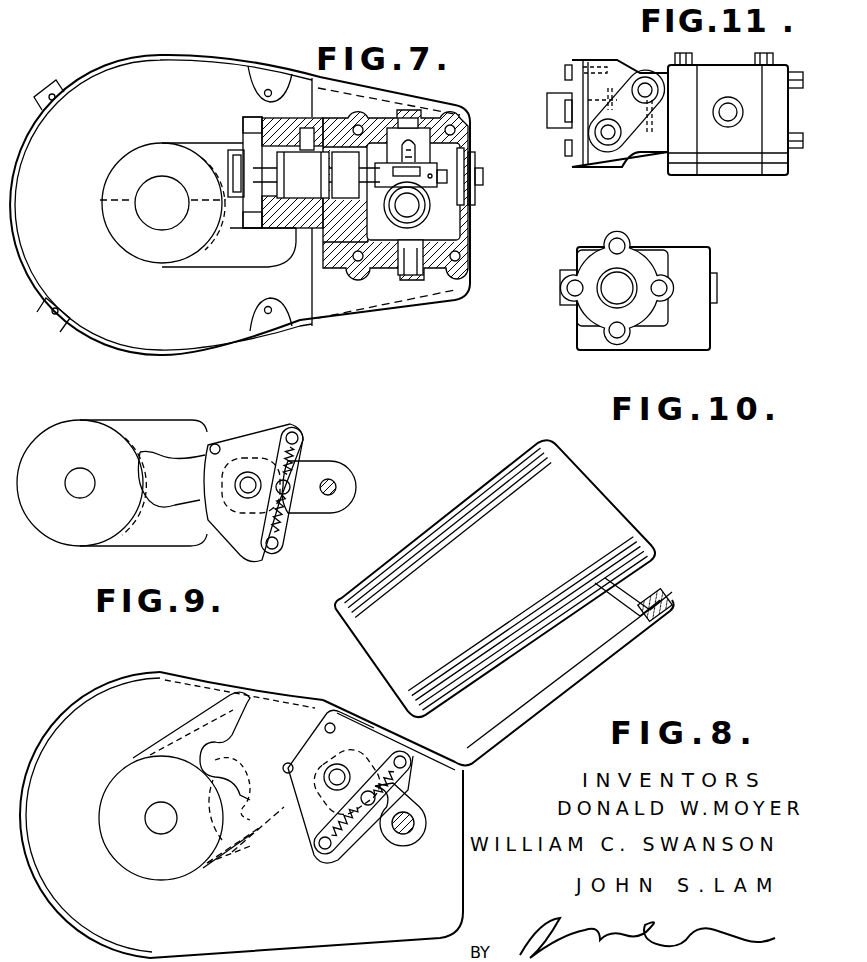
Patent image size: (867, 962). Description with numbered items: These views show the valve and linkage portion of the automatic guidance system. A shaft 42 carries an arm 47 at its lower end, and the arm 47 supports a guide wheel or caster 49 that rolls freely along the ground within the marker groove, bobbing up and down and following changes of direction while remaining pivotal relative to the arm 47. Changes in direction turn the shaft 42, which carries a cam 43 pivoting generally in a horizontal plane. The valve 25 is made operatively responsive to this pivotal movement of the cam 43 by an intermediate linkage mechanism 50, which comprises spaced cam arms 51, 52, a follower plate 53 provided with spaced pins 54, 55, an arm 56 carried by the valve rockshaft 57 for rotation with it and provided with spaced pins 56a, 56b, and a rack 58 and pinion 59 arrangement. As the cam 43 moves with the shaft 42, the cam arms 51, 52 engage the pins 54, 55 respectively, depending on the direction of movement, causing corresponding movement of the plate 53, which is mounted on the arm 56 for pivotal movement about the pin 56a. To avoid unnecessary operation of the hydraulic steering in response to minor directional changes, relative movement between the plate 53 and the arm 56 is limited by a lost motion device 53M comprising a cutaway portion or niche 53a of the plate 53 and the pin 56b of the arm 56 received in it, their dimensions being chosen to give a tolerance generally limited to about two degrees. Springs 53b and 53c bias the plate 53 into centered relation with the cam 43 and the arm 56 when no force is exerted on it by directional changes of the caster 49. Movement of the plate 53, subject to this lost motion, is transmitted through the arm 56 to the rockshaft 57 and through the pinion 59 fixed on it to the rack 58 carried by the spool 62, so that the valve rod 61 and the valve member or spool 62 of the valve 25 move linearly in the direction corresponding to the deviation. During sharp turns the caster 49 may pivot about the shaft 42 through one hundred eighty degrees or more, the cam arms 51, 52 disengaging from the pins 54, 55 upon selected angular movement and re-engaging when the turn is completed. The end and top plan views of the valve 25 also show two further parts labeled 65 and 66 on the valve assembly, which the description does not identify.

In FIG. 11, the valve 25 is at (640, 156).
In FIG. 10, the valve 25 is at (660, 246).
In FIG. 9, the shaft 42 is at (80, 488).
In FIG. 8, the shaft 42 is at (163, 827).
In FIG. 7, the cam 43 is at (163, 172).
In FIG. 9, the cam 43 is at (93, 456).
In FIG. 8, the cam 43 is at (140, 821).
In FIG. 7, the arm 47 is at (437, 0).
In FIG. 8, the arm 47 is at (540, 713).
In FIG. 8, the guide wheel or caster 49 is at (497, 582).
In FIG. 9, the intermediate linkage mechanism 50 is at (244, 423).
In FIG. 8, the intermediate linkage mechanism 50 is at (342, 860).
In FIG. 9, the cam arm 51 is at (164, 449).
In FIG. 8, the cam arm 51 is at (185, 722).
In FIG. 7, the cam arm 52 is at (260, 256).
In FIG. 9, the cam arm 52 is at (181, 544).
In FIG. 8, the cam arm 52 is at (245, 810).
In FIG. 9, the follower plate 53 is at (225, 540).
In FIG. 8, the follower plate 53 is at (363, 803).
In FIG. 9, the cutaway portion or niche 53a is at (296, 478).
In FIG. 8, the cutaway portion or niche 53a is at (412, 790).
In FIG. 9, the spring 53b is at (288, 424).
In FIG. 8, the spring 53b is at (498, 685).
In FIG. 9, the spring 53c is at (261, 557).
In FIG. 8, the spring 53c is at (327, 848).
In FIG. 9, the lost motion device 53M is at (292, 502).
In FIG. 8, the lost motion device 53M is at (363, 817).
In FIG. 9, the pin 54 is at (200, 487).
In FIG. 8, the pin 54 is at (283, 768).
In FIG. 9, the pin 55 is at (221, 449).
In FIG. 8, the pin 55 is at (330, 722).
In FIG. 9, the arm 56 is at (320, 460).
In FIG. 8, the arm 56 is at (424, 812).
In FIG. 8, the pin 56a is at (345, 765).
In FIG. 9, the pin 56b is at (290, 490).
In FIG. 8, the pin 56b is at (372, 808).
In FIG. 7, the valve rockshaft 57 is at (405, 205).
In FIG. 9, the valve rockshaft 57 is at (337, 487).
In FIG. 8, the valve rockshaft 57 is at (410, 830).
In FIG. 7, the rack 58 is at (435, 183).
In FIG. 7, the pinion 59 is at (414, 222).
In FIG. 7, the valve rod 61 is at (356, 180).
In FIG. 7, the valve member or spool 62 is at (303, 175).
In FIG. 11, the bolt 65 is at (604, 145).
In FIG. 11, the bolt 66 is at (645, 77).